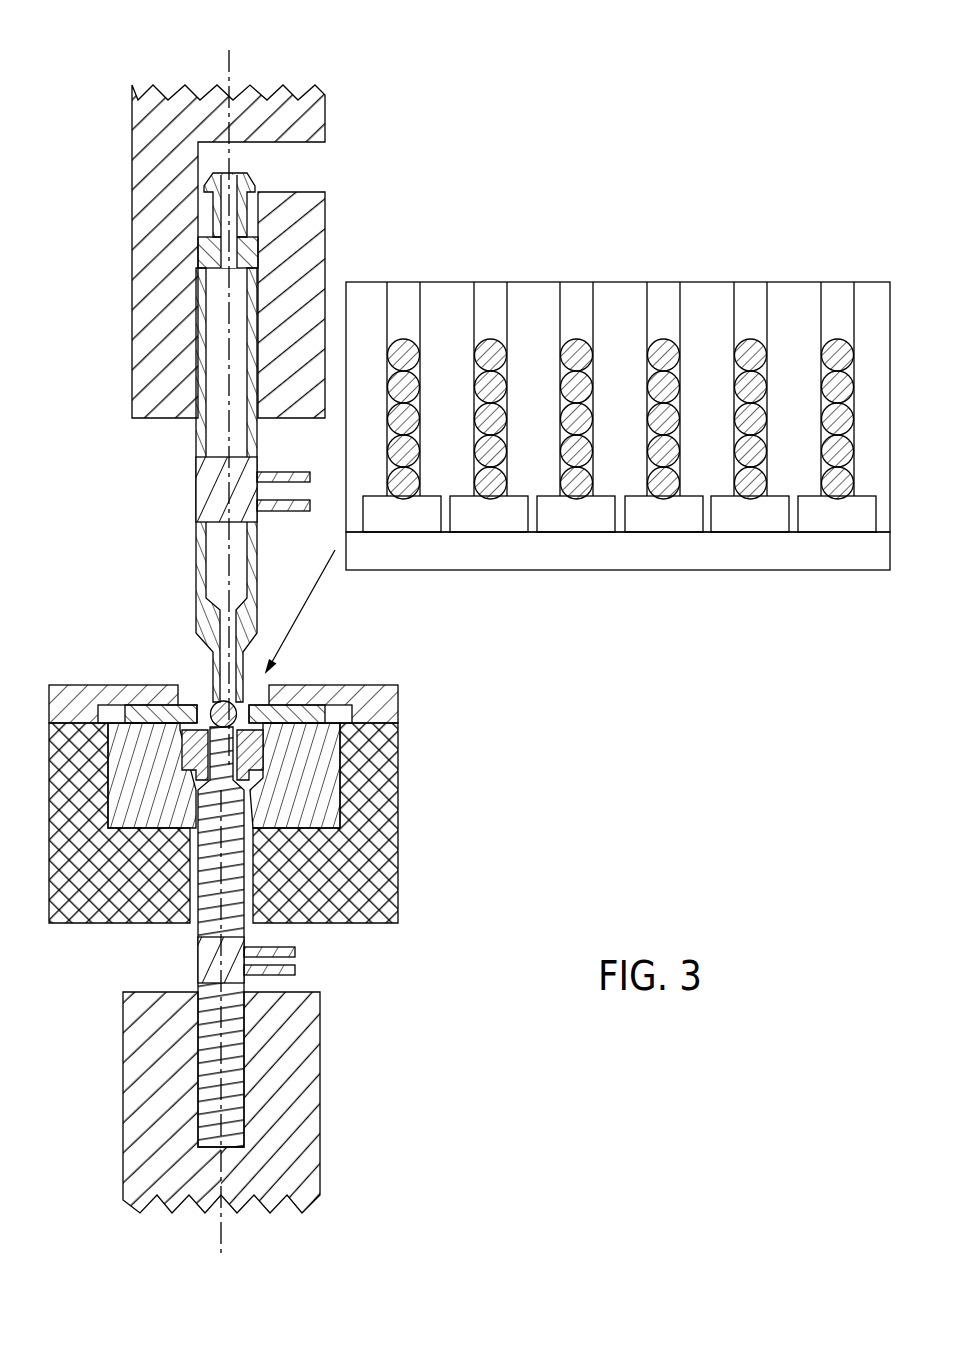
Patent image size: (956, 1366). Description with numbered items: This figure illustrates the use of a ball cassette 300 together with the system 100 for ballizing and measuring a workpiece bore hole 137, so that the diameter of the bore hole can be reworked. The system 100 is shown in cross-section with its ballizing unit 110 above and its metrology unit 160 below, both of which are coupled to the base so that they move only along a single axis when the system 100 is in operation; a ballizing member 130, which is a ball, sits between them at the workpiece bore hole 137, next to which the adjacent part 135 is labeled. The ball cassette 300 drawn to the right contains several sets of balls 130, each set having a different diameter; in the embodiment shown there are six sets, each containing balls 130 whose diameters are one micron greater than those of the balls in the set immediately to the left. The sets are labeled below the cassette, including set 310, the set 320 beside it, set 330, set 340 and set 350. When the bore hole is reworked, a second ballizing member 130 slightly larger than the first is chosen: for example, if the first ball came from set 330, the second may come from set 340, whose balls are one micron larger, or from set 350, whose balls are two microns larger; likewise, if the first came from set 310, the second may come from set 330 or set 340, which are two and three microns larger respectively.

The system 100 is at (352, 60).
The ballizing unit 110 is at (93, 212).
The ballizing member 130 is at (208, 705).
The lower clamp insert 135 is at (263, 760).
The workpiece bore hole 137 is at (263, 736).
The metrology unit 160 is at (350, 1108).
The ball cassette 300 is at (792, 282).
The set 310 is at (404, 532).
The -1 micron ball column 320 is at (491, 532).
The set 330 is at (578, 532).
The set 340 is at (665, 532).
The set 350 is at (752, 532).